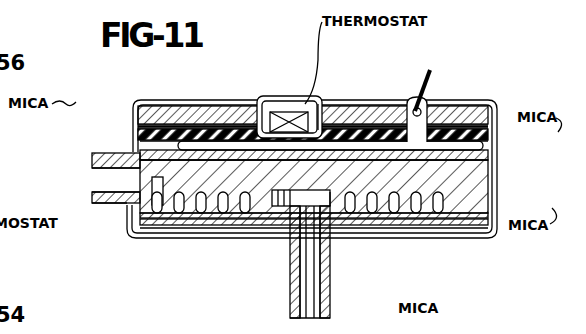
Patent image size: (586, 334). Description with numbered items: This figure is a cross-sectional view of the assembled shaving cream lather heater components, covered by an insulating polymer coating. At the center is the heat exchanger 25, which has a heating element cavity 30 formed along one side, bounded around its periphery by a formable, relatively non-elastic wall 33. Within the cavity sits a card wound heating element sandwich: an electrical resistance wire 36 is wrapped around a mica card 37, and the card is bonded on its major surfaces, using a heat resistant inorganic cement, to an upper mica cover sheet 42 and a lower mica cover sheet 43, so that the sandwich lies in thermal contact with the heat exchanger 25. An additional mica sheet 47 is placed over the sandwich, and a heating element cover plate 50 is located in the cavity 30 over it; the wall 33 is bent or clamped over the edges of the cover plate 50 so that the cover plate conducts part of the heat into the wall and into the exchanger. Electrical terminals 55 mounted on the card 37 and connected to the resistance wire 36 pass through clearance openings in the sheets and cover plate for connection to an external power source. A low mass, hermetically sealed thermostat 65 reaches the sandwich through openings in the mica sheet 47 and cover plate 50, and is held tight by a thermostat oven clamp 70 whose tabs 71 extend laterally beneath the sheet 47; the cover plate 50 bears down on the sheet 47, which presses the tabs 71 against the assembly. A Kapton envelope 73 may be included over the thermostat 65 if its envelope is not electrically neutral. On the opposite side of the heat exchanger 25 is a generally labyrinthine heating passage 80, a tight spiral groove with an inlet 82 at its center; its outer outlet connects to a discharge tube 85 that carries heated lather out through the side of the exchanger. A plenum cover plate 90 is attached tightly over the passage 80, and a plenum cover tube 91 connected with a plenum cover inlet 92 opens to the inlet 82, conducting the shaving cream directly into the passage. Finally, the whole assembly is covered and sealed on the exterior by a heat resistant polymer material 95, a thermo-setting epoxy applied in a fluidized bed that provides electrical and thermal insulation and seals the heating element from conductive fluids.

The heat exchanger 25 is at (369, 92).
The heating element cavity 30 is at (146, 145).
The wall 33 is at (496, 112).
The electrical resistance wire 36 is at (428, 215).
The mica card 37 is at (405, 222).
The mica cover sheet 42 is at (494, 136).
The mica cover sheet 43 is at (497, 182).
The mica sheet 47 is at (140, 146).
The heating element cover plate 50 is at (183, 112).
The electrical terminals 55 is at (428, 102).
The thermostat 65 is at (293, 112).
The thermostat oven clamp 70 is at (266, 99).
The tabs 71 is at (226, 126).
The Kapton envelope 73 is at (314, 104).
The heating passage 80 is at (223, 208).
The inlet 82 is at (322, 200).
The discharge tube 85 is at (96, 160).
The plenum cover plate 90 is at (180, 226).
The plenum cover tube 91 is at (298, 288).
The plenum cover inlet 92 is at (292, 220).
The heat resistant polymer material 95 is at (147, 101).